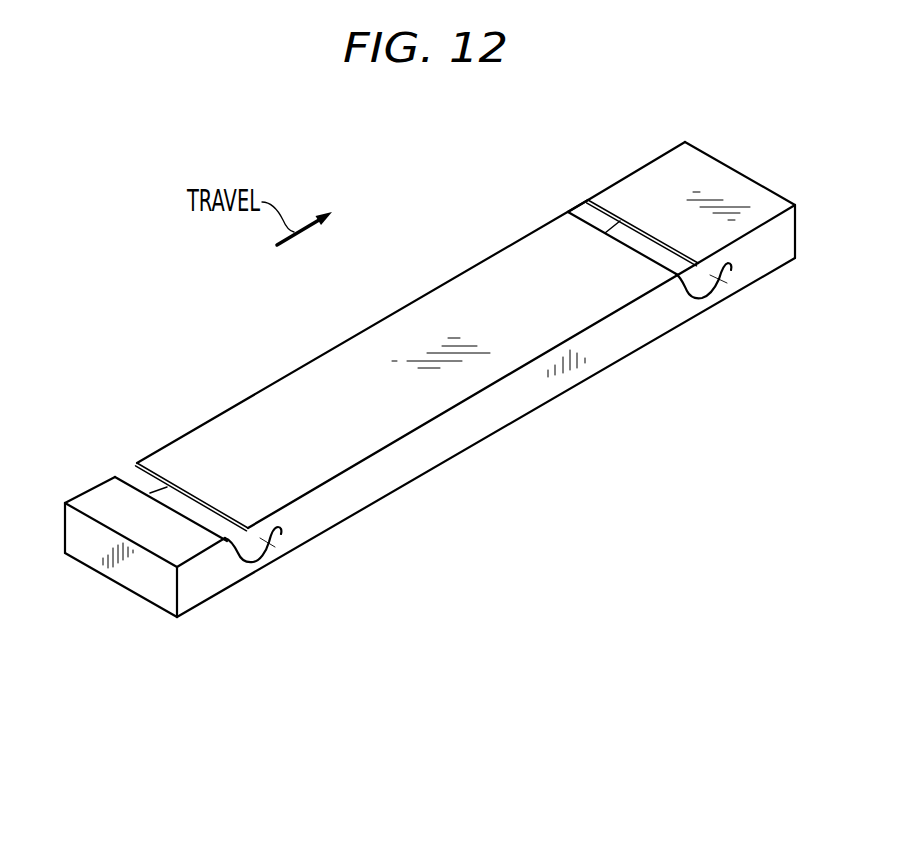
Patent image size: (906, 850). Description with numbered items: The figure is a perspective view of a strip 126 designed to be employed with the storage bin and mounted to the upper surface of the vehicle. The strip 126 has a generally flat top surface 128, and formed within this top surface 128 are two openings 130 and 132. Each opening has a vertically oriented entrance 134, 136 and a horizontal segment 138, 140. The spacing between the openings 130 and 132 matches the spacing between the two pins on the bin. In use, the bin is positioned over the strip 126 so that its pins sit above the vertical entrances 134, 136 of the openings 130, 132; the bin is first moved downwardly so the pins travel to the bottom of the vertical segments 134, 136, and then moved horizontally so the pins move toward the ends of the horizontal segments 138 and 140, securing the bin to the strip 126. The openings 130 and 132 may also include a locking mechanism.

The strip 126 is at (326, 353).
The top surface 128 is at (484, 281).
The opening 130 is at (133, 475).
The opening 132 is at (583, 209).
The vertically oriented entrance 134 is at (205, 517).
The vertically oriented entrance 136 is at (642, 243).
The horizontal segment 138 is at (280, 530).
The horizontal segment 140 is at (731, 267).